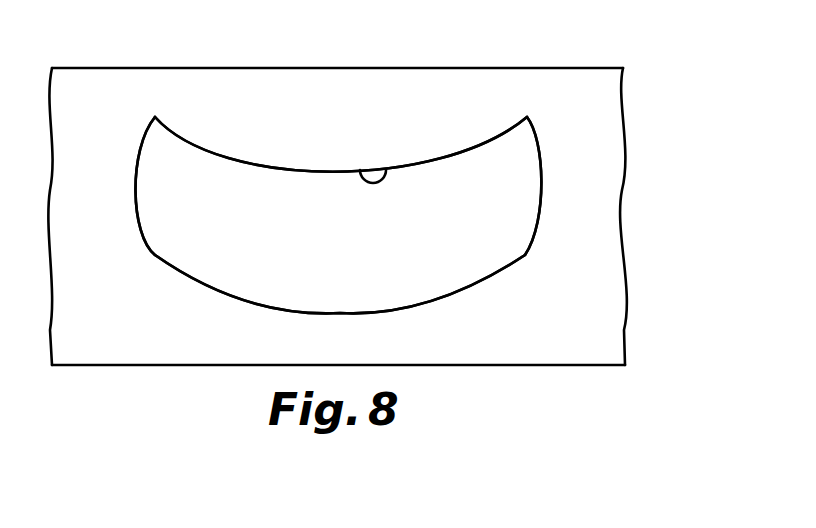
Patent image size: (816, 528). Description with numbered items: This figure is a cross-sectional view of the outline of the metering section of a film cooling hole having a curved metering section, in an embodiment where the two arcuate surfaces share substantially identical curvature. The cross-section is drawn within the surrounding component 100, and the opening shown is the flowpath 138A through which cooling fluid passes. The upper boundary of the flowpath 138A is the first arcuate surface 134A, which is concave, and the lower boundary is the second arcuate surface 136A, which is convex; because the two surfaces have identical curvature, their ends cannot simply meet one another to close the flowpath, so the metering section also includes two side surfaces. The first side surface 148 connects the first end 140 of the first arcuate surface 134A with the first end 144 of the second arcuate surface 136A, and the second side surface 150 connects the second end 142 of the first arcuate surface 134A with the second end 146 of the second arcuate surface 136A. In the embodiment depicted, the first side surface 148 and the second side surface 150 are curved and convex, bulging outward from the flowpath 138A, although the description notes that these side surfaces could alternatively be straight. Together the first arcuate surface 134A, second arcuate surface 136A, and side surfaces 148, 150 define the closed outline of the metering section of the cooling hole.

The substrate / plate 100 is at (587, 145).
The first arcuate surface 134A is at (386, 170).
The second arcuate surface 136A is at (345, 310).
The flowpath 138A is at (362, 248).
The first end of first arcuate surface 140 is at (155, 117).
The second end of first arcuate surface 142 is at (527, 117).
The first end of second arcuate surface 144 is at (153, 258).
The second end of second arcuate surface 146 is at (527, 257).
The first side surface 148 is at (137, 187).
The second side surface 150 is at (545, 184).